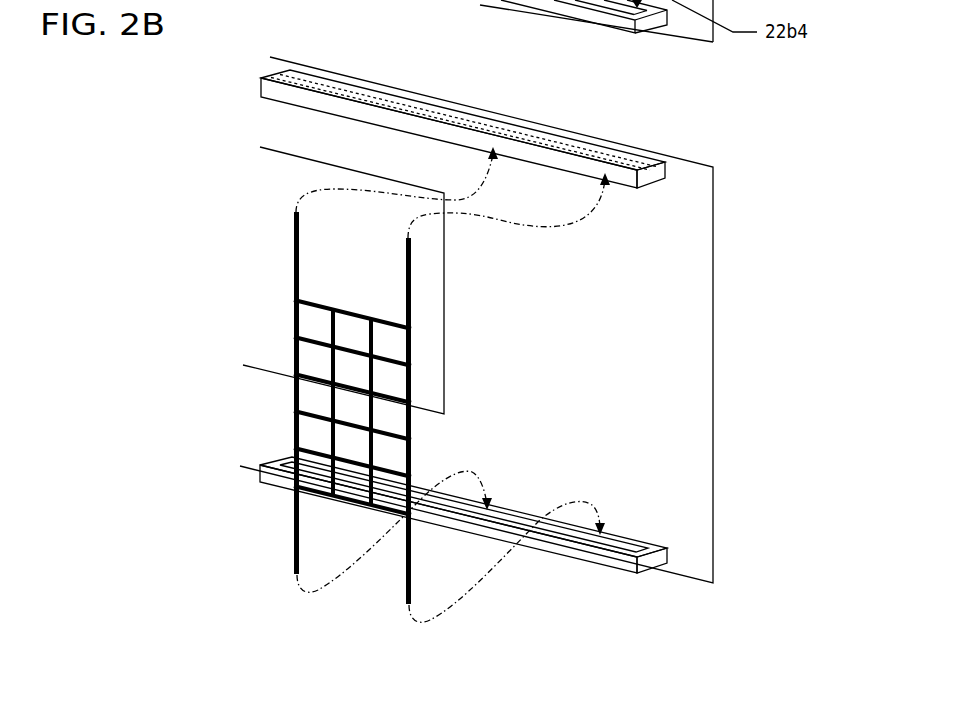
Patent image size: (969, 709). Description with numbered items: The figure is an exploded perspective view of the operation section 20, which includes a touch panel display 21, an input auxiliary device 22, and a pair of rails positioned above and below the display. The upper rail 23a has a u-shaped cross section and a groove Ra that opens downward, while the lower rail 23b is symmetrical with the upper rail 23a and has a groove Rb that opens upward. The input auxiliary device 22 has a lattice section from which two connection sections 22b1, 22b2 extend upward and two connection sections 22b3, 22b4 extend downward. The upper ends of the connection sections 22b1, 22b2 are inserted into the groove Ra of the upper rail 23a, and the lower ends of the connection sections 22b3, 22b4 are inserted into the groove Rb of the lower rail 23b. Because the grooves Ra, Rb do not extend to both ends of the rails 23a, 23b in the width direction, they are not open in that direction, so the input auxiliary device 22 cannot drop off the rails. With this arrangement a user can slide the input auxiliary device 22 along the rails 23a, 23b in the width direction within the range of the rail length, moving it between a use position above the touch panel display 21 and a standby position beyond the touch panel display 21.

The operation section 20 is at (125, 98).
The touch panel display 21 is at (379, 280).
The input auxiliary device 22 is at (314, 407).
The connection section 22b1 is at (360, 271).
The connection section 22b2 is at (461, 296).
The connection section 22b3 is at (350, 500).
The connection section 22b4 is at (453, 524).
The upper rail 23a is at (416, 124).
The lower rail 23b is at (505, 537).
The groove Ra is at (262, 99).
The groove Rb is at (522, 507).